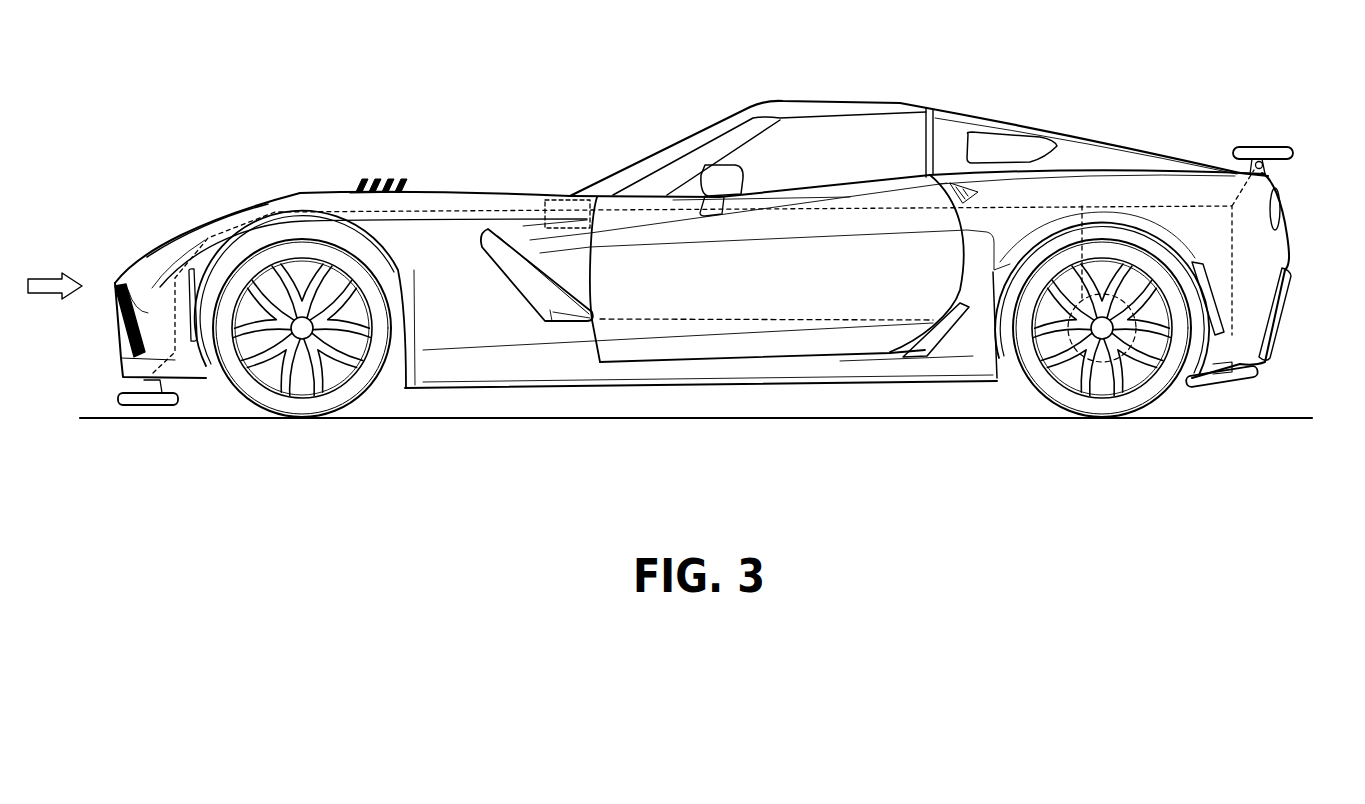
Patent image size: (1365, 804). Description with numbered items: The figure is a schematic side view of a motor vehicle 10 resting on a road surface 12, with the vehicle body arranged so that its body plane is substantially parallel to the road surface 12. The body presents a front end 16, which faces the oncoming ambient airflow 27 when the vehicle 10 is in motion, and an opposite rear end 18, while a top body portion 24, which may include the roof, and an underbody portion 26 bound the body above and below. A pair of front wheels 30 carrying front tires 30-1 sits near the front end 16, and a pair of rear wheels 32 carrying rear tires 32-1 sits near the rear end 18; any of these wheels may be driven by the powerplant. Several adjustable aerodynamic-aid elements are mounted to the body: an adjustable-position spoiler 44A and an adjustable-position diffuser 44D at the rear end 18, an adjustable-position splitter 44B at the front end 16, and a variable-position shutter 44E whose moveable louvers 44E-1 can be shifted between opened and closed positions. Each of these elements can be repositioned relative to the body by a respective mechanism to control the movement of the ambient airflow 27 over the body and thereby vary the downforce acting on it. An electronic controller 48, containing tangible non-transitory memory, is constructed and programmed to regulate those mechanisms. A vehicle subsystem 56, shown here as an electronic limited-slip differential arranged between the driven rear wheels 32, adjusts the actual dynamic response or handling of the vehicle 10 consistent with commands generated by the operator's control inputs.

The motor vehicle 10 is at (1165, 58).
The road surface 12 is at (540, 420).
The front end 16 is at (122, 263).
The rear end 18 is at (1298, 254).
The top body portion 24 is at (851, 98).
The underbody portion 26 is at (720, 388).
The ambient airflow 27 is at (44, 280).
The front wheels 30 is at (259, 342).
The front tires 30-1 is at (360, 383).
The rear wheels 32 is at (1150, 345).
The rear tires 32-1 is at (1048, 388).
The adjustable-position spoiler 44A is at (1262, 148).
The adjustable-position splitter 44B is at (113, 397).
The adjustable-position diffuser 44D is at (1267, 375).
The variable-position shutter 44E is at (397, 171).
The moveable louvers 44E-1 is at (356, 181).
The electronic controller 48 is at (563, 199).
The vehicle subsystem 56 is at (1104, 339).